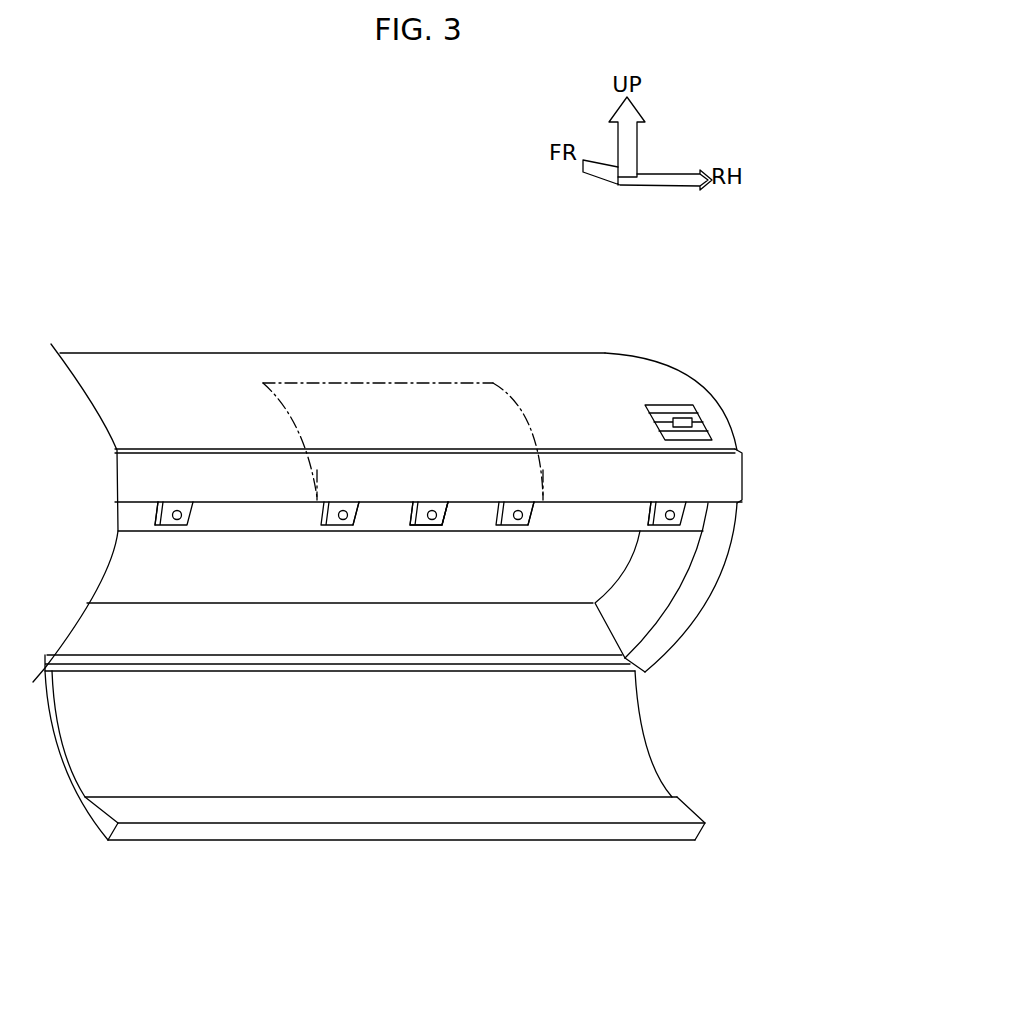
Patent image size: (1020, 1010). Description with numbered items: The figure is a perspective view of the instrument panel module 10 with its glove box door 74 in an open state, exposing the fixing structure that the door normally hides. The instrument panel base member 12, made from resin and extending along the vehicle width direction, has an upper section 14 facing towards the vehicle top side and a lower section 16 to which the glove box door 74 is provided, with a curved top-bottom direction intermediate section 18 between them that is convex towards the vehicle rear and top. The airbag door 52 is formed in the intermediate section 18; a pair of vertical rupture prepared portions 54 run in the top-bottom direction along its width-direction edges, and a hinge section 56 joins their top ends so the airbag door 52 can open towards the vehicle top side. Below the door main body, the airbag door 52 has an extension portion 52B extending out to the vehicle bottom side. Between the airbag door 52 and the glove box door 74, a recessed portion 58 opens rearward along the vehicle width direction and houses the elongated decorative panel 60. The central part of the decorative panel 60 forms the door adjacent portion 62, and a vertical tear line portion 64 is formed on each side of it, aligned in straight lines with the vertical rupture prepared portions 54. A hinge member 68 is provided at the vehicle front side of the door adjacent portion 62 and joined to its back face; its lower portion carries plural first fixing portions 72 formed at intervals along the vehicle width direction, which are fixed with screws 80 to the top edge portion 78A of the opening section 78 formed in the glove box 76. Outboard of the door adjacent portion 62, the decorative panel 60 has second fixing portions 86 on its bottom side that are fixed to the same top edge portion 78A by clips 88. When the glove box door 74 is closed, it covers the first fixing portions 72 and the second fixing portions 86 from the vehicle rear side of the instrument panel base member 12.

The instrument panel module 10 is at (358, 250).
The instrument panel base member 12 is at (172, 352).
The upper section 14 is at (578, 368).
The lower section 16 is at (699, 598).
The top-bottom direction intermediate section 18 is at (598, 428).
The airbag door 52 is at (404, 402).
The extension portion 52B is at (364, 402).
The vertical rupture prepared portions 54 is at (280, 428).
The hinge section 56 is at (352, 382).
The recessed portion 58 is at (232, 452).
The decorative panel 60 is at (745, 477).
The door adjacent portion 62 is at (420, 472).
The vertical tear line portion 64 is at (316, 494).
The hinge member 68 is at (407, 518).
The first fixing portions 72 is at (349, 520).
The glove box door 74 is at (428, 778).
The glove box 76 is at (641, 598).
The opening section 78 is at (503, 640).
The top edge portion 78A is at (239, 522).
The screws 80 is at (337, 526).
The second fixing portions 86 is at (155, 512).
The clips 88 is at (178, 524).